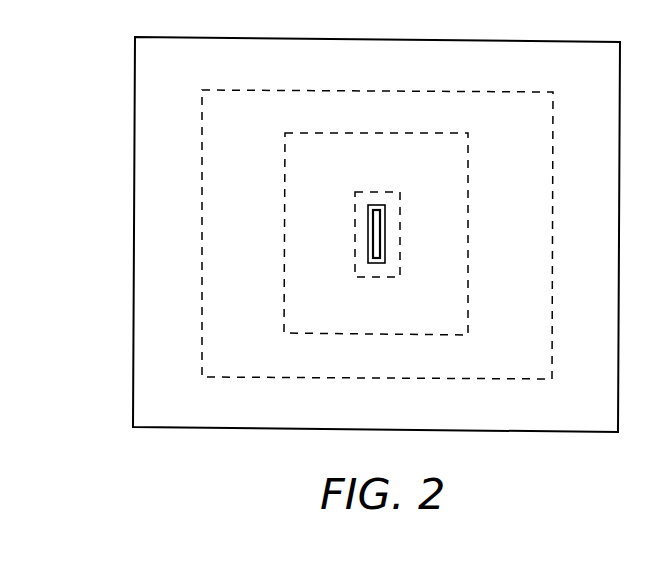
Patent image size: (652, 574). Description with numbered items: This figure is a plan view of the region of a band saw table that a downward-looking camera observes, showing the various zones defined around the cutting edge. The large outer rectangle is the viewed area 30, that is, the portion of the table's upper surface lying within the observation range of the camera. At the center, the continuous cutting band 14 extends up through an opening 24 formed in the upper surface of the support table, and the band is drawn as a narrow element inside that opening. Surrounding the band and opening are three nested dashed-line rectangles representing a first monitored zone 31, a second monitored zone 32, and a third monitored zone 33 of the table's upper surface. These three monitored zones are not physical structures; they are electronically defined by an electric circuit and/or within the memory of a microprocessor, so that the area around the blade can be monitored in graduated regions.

The viewed area 30 is at (133, 232).
The first monitored zone 31 is at (551, 260).
The second monitored zone 32 is at (468, 307).
The third monitored zone 33 is at (370, 192).
The opening 24 is at (385, 255).
The continuous cutting band 14 is at (377, 232).